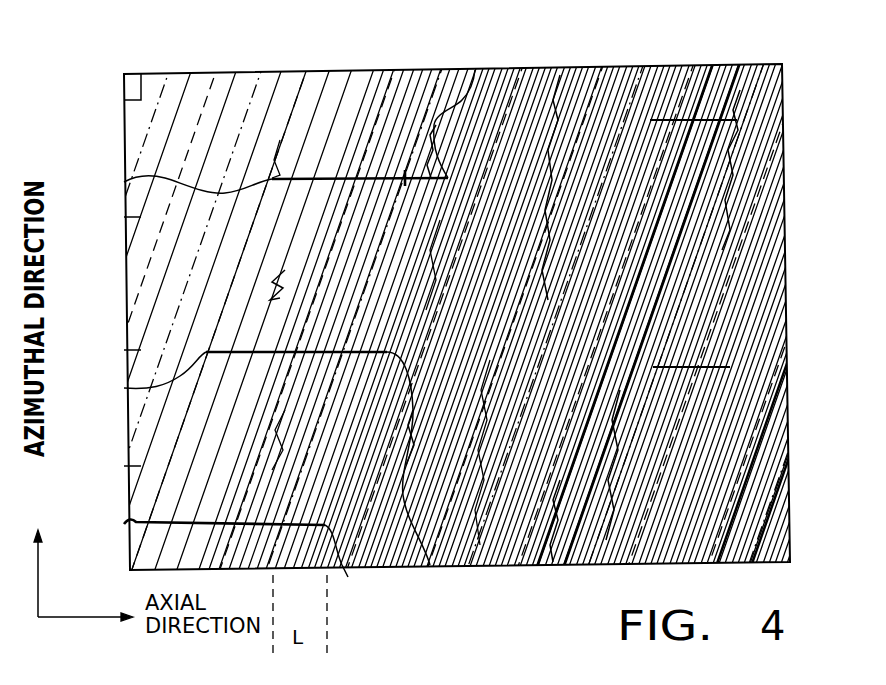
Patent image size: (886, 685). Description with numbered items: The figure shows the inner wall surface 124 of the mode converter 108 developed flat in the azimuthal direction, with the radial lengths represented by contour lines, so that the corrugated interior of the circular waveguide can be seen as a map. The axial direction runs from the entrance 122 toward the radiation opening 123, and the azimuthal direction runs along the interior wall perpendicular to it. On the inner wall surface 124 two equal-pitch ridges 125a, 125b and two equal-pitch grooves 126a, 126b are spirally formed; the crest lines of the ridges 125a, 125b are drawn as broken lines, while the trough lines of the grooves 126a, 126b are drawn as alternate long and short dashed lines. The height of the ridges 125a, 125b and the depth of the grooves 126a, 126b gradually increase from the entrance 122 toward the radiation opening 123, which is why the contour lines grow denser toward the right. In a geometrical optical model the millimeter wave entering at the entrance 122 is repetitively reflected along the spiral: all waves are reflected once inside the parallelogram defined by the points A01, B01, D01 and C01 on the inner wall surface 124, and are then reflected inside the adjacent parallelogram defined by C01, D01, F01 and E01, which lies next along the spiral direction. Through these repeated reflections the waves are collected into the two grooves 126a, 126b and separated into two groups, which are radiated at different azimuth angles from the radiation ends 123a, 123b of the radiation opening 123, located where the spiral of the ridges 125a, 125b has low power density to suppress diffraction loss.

The mode converter 108 is at (654, 64).
The entrance 122 is at (126, 269).
The radiation opening 123 is at (708, 190).
The radiation end 123a is at (737, 120).
The radiation end 123b is at (730, 367).
The inner wall surface 124 is at (545, 566).
The ridge 125a is at (216, 73).
The ridge 125b is at (308, 73).
The groove 126a is at (188, 63).
The groove 126b is at (266, 48).
The parallelogram vertex E01 is at (124, 182).
The parallelogram vertex F01 is at (475, 70).
The parallelogram vertex C01 is at (124, 388).
The parallelogram vertex D01 is at (428, 565).
The parallelogram vertex A01 is at (124, 524).
The parallelogram vertex B01 is at (348, 577).